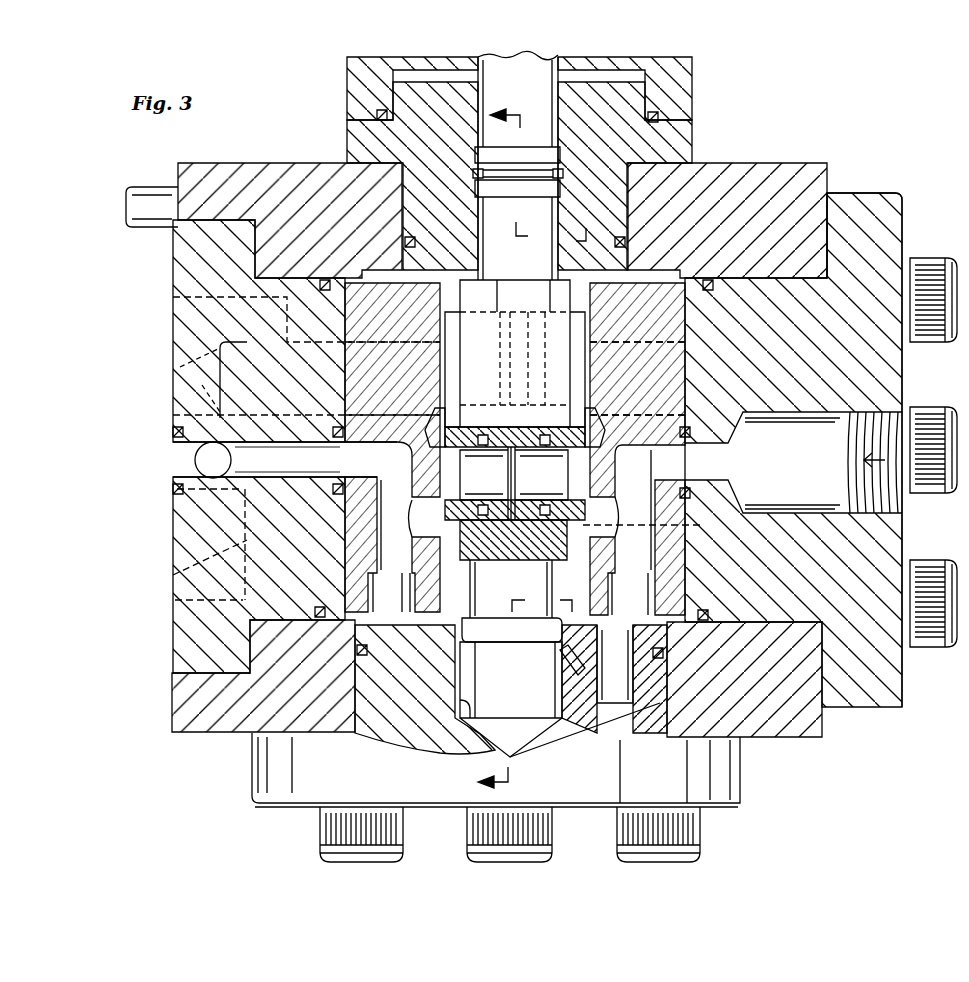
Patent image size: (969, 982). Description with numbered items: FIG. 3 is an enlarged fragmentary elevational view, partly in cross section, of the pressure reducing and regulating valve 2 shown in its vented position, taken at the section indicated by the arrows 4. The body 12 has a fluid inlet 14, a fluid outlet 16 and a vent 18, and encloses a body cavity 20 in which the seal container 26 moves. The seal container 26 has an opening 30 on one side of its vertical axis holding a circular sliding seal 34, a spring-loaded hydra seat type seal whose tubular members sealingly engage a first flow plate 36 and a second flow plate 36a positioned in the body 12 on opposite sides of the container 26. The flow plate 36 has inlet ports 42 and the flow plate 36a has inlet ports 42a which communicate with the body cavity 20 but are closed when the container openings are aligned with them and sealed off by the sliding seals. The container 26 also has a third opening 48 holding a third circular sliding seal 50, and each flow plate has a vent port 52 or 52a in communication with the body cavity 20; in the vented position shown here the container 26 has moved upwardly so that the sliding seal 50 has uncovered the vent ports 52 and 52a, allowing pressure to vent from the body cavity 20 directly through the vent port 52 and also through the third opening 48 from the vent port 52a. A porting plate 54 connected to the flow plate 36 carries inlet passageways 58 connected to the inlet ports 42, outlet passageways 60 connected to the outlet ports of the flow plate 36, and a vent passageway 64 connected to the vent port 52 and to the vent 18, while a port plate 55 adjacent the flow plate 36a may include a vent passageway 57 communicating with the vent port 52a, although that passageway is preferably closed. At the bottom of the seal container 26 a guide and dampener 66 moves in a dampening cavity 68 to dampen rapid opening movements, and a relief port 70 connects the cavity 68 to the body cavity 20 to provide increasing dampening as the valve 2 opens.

The valve 2 is at (938, 452).
The section line 4- 4 is at (507, 448).
The body 12 is at (772, 165).
The fluid inlet 14 is at (178, 313).
The fluid outlet 16 is at (173, 510).
The vent 18 is at (173, 465).
The body cavity 20 is at (452, 620).
The seal container 26 is at (497, 297).
The second opening 30 is at (517, 407).
The second circular sliding seal 34 is at (573, 307).
The first flow plate 36 is at (360, 285).
The second flow plate 36a is at (682, 286).
The inlet ports 42 is at (398, 347).
The inlet ports 42a is at (633, 407).
The third opening 48 is at (468, 486).
The third circular sliding seal 50 is at (541, 483).
The vent port 52 is at (410, 512).
The vent port 52a is at (612, 510).
The porting plate 54 is at (182, 655).
The port plate 55 is at (890, 230).
The vent passageway 57 is at (782, 471).
The inlet passageways 58 is at (180, 367).
The outlet passageways 60 is at (173, 577).
The vent passageway 64 is at (253, 481).
The guide and dampener 66 is at (497, 603).
The dampening cavity 68 is at (482, 708).
The relief port 70 is at (572, 675).